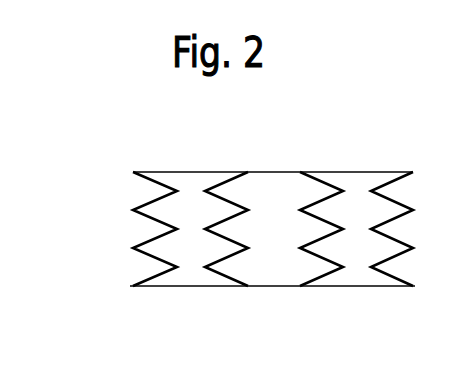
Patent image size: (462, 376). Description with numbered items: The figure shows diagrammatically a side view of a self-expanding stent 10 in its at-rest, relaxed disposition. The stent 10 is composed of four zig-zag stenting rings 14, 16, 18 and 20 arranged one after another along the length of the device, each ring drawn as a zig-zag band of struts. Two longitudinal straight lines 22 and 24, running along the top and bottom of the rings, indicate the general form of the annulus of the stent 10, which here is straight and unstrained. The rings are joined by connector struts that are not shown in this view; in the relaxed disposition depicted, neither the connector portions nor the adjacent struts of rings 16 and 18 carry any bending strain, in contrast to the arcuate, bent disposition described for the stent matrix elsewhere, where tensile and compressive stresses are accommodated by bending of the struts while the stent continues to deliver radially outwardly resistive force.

The stent 10 is at (298, 290).
The zig-zag stenting ring 14 is at (165, 178).
The zig-zag stenting ring 16 is at (218, 178).
The zig-zag stenting ring 18 is at (330, 178).
The zig-zag stenting ring 20 is at (380, 178).
The longitudinal straight line 22 is at (267, 171).
The longitudinal straight line 24 is at (263, 287).